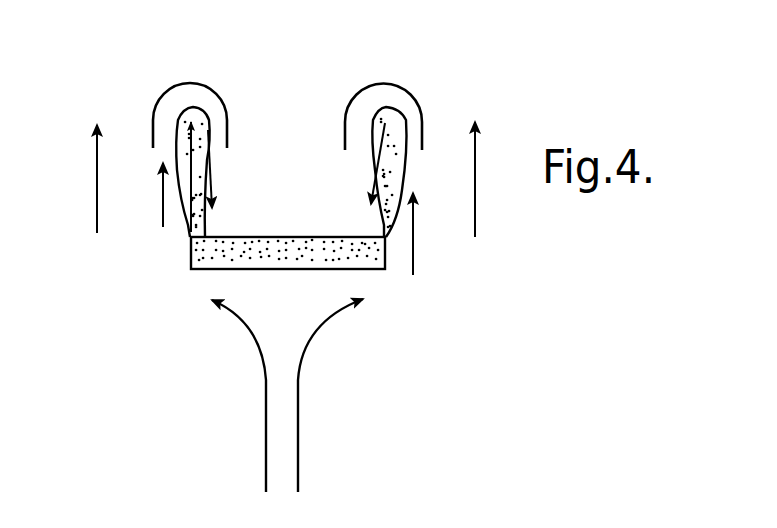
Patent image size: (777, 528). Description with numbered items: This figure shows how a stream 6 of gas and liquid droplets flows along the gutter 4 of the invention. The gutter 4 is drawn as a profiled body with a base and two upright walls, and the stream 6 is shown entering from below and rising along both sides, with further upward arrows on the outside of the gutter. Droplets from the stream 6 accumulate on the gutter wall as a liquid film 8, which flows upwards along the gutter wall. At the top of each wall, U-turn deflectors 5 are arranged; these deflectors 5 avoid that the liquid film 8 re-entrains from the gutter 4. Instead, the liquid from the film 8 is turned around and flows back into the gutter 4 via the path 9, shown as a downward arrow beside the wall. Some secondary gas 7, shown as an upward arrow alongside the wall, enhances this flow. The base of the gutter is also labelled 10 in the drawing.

The gutter 4 is at (388, 266).
The U-turn deflectors 5 is at (422, 111).
The stream 6 is at (95, 193).
The secondary gas 7 is at (160, 217).
The liquid film 8 is at (193, 140).
The flow of liquid into the gutter 9 is at (213, 182).
The base bar 10 is at (313, 237).